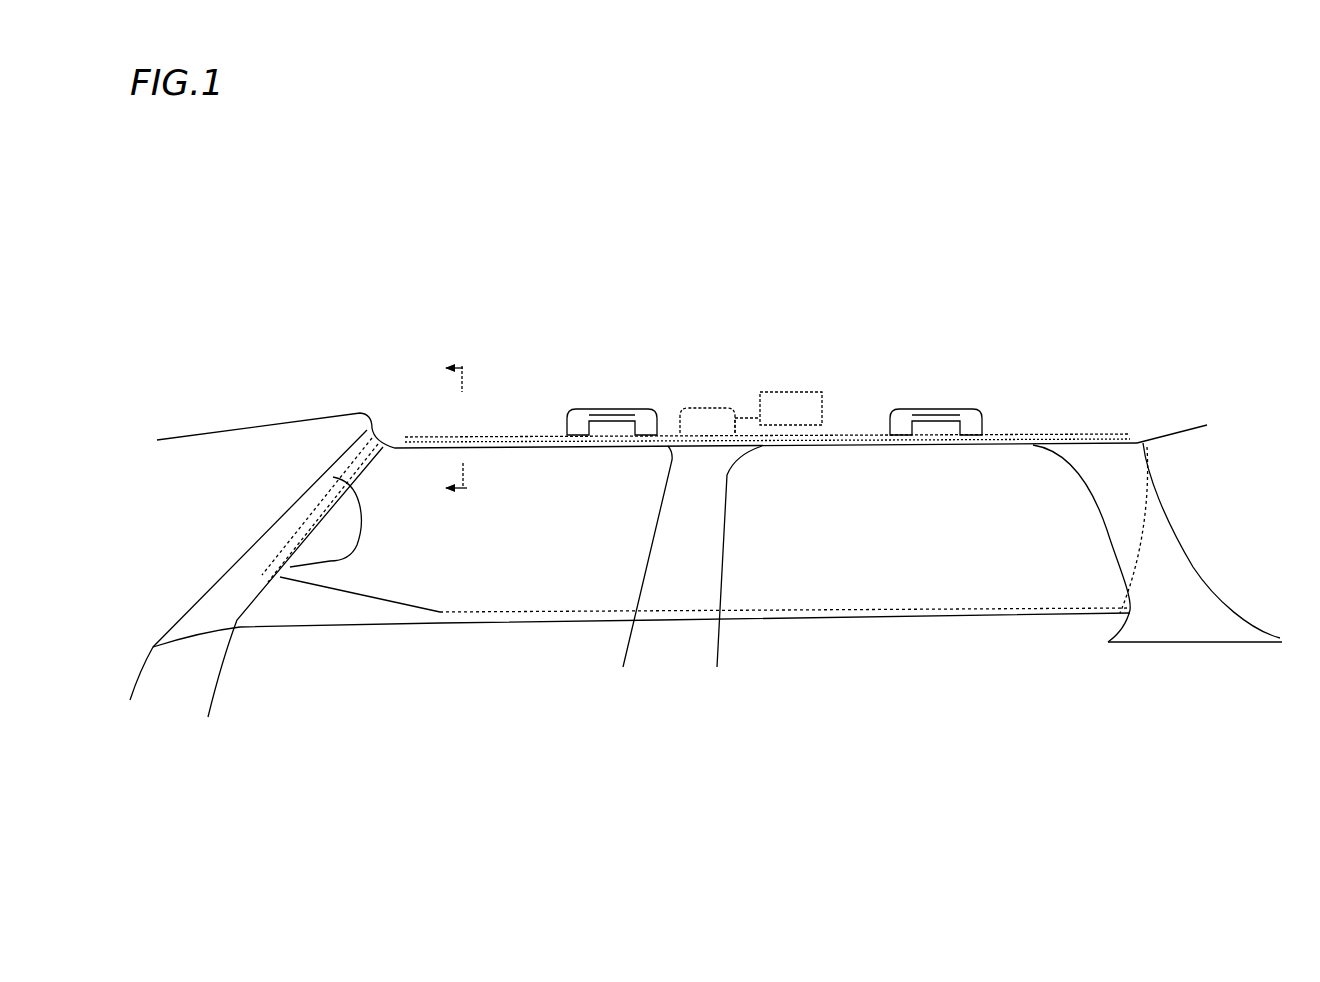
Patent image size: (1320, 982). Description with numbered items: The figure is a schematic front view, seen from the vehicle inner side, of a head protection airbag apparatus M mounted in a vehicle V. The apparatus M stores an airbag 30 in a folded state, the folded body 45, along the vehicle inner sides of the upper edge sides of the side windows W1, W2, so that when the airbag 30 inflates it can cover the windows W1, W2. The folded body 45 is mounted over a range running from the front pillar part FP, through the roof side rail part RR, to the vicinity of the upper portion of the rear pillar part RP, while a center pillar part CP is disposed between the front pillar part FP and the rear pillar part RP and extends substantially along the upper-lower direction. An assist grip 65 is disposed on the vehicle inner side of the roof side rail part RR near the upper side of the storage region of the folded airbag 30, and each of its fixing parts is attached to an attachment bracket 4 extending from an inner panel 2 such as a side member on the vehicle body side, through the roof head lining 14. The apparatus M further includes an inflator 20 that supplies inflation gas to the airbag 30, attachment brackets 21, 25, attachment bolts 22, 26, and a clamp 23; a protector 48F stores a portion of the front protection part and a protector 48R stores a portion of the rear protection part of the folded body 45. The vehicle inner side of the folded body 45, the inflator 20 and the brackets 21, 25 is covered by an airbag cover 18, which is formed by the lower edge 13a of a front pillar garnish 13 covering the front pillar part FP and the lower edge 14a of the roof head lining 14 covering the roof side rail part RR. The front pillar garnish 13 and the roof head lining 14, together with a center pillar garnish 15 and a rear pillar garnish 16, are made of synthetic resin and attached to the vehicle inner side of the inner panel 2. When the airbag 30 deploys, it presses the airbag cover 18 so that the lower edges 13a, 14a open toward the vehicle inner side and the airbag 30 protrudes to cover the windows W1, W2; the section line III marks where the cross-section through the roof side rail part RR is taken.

The inner panel 2 is at (260, 567).
The attachment bracket 4 is at (580, 410).
The front pillar garnish 13 is at (302, 497).
The lower edge of front pillar garnish 13a is at (280, 577).
The roof head lining 14 is at (523, 430).
The lower edge of roof head lining 14a is at (517, 450).
The center pillar garnish 15 is at (710, 563).
The rear pillar garnish 16 is at (1167, 543).
The airbag cover 18 is at (317, 537).
The inflator 20 is at (813, 387).
The attachment bracket 21 is at (790, 447).
The attachment bolt 22 is at (770, 420).
The clamp 23 is at (730, 433).
The attachment bracket 25 is at (270, 560).
The attachment bolt 26 is at (263, 567).
The airbag 30 is at (507, 610).
The folded body 45 is at (877, 447).
The protector 48F is at (407, 437).
The protector 48R is at (860, 433).
The assist grip 65 is at (613, 398).
The section line III- III is at (458, 432).
The front pillar part FP is at (187, 602).
The rear pillar part RP is at (1210, 570).
The roof side rail part RR is at (1007, 427).
The head protection airbag apparatus M is at (1147, 403).
The vehicle V is at (1200, 397).
The center pillar part CP is at (727, 590).
The window W1 is at (400, 613).
The window W2 is at (910, 597).